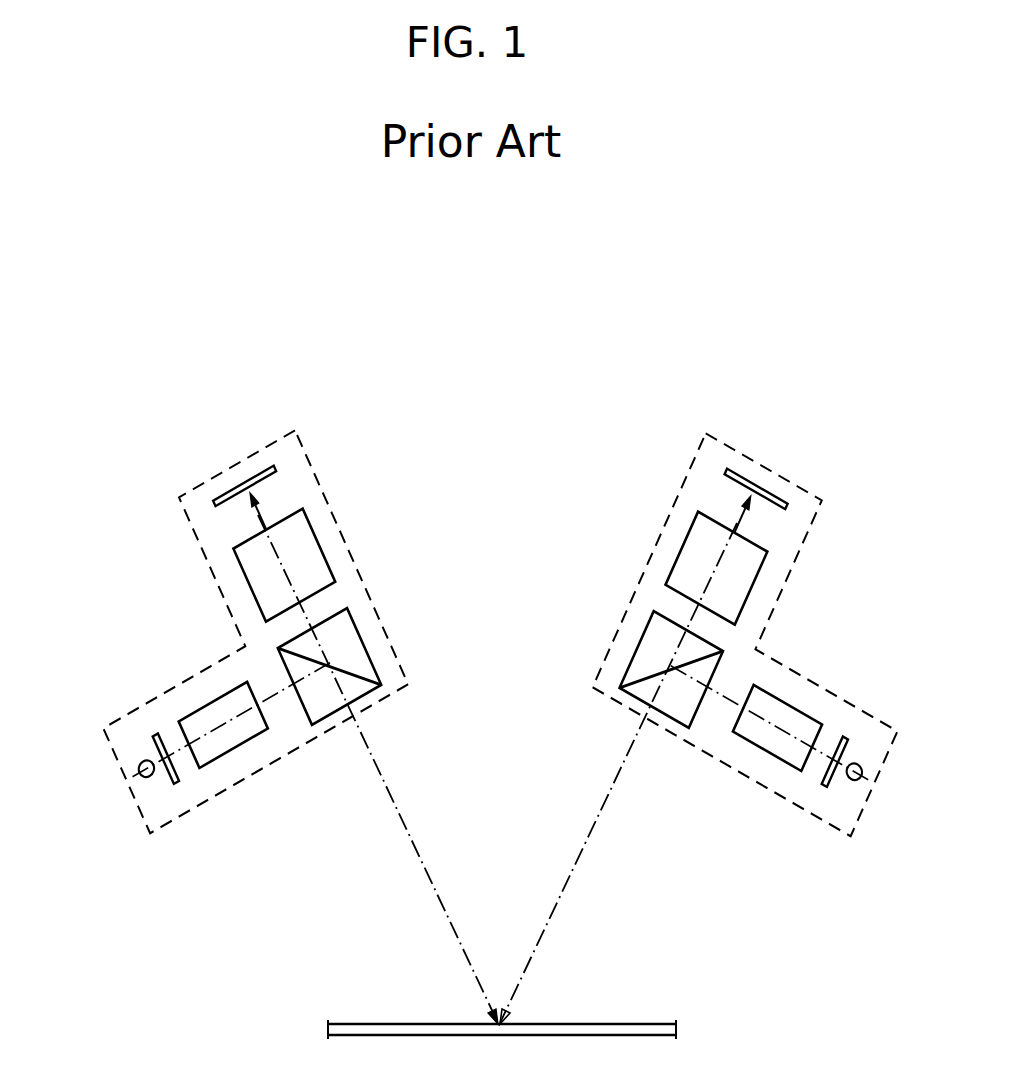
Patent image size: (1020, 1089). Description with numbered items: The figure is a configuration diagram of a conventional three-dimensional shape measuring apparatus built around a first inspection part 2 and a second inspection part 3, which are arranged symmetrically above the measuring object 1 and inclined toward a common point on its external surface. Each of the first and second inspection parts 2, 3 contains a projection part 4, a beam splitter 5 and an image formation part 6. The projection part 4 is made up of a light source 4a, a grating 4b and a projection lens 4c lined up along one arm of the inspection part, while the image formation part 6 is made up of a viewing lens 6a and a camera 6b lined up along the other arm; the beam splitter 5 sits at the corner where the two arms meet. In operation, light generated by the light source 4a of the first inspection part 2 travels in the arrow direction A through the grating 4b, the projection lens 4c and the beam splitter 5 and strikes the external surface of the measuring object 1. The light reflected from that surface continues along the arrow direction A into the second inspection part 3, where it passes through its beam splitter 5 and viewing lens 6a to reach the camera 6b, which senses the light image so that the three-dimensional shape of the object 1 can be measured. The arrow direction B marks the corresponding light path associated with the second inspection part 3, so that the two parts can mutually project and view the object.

The measuring object 1 is at (359, 1022).
The first inspection part 2 is at (223, 466).
The second inspection part 3 is at (774, 465).
The projection part 4 is at (448, 774).
The light source 4a is at (455, 794).
The grating 4b is at (156, 735).
The projection lens 4c is at (200, 707).
The beam splitter 5 is at (620, 686).
The image formation part 6 is at (500, 491).
The viewing lens 6a is at (330, 562).
The camera 6b is at (436, 527).
The arrow direction A is at (320, 678).
The arrow direction B is at (252, 505).